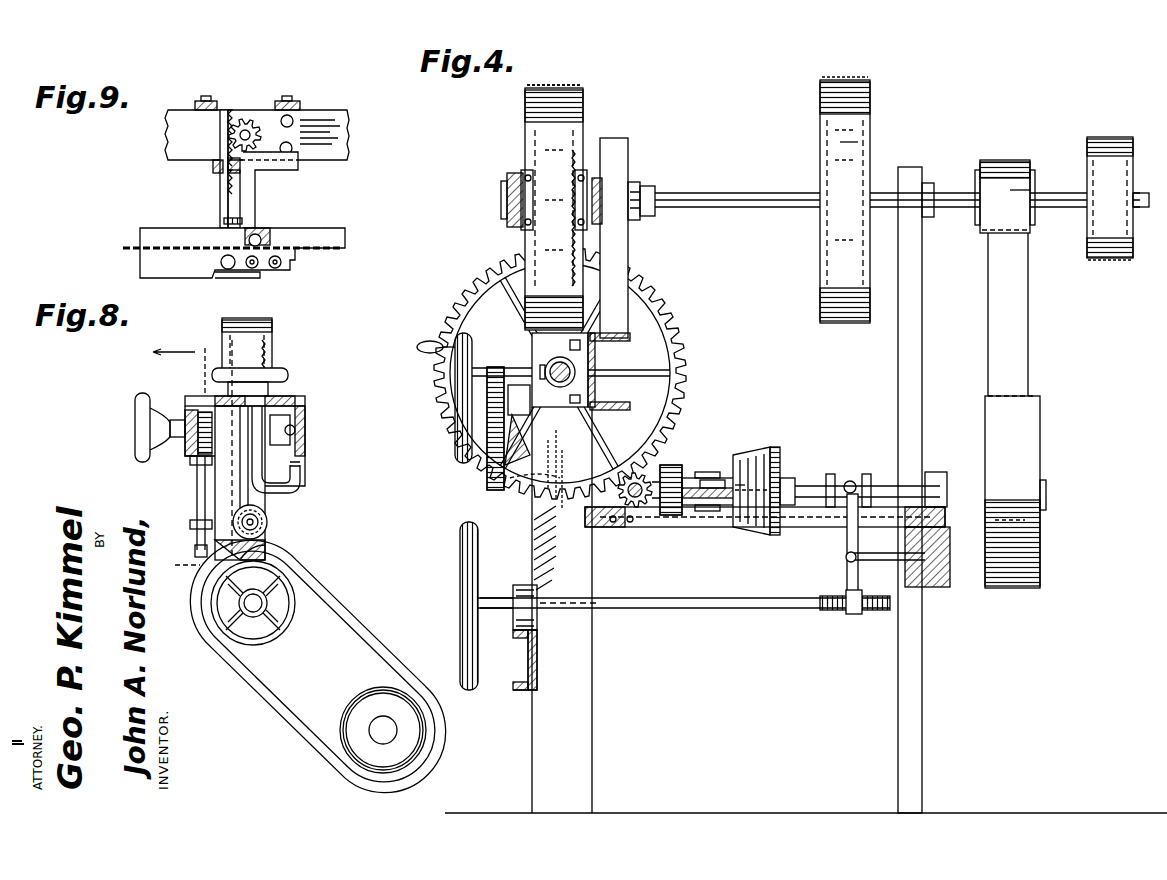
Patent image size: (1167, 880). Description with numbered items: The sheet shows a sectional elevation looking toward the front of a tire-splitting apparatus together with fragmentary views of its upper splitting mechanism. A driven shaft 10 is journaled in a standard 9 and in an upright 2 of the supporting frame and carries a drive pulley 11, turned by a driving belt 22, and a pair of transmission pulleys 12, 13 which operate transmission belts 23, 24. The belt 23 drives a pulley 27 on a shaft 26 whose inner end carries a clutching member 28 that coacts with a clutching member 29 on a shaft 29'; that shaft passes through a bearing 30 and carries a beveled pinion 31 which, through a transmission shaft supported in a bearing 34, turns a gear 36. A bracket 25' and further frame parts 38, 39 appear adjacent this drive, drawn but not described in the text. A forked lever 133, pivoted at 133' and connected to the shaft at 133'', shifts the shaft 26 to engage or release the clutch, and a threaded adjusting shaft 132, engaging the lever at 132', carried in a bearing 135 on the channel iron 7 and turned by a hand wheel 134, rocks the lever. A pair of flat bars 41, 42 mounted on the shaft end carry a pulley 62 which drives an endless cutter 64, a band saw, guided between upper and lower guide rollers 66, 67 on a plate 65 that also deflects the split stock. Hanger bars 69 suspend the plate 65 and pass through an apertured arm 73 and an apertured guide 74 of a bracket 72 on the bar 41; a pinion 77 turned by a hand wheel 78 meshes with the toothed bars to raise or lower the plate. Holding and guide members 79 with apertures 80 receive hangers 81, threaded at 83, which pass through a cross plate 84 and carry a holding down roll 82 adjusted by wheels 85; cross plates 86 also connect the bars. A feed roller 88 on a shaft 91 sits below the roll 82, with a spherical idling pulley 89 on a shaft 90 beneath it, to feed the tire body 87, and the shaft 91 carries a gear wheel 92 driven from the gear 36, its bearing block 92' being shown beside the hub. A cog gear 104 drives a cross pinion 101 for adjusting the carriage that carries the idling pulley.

In FIG. 4, the upright 2 is at (915, 332).
In FIG. 4, the channel iron 7 is at (528, 666).
In FIG. 8, the standard 9 is at (180, 451).
In FIG. 4, the driven shaft 10 is at (758, 193).
In FIG. 4, the drive pulley 11 is at (852, 142).
In FIG. 4, the transmission pulley 12 is at (1032, 178).
In FIG. 4, the transmission pulley 13 is at (1087, 232).
In FIG. 4, the driving belt 22 is at (845, 80).
In FIG. 4, the transmission belt 23 is at (1000, 162).
In FIG. 4, the transmission belt 24 is at (1105, 260).
In FIG. 4, the bracket 25' is at (938, 506).
In FIG. 4, the shaft 26 is at (810, 486).
In FIG. 4, the pulley 27 is at (1045, 415).
In FIG. 4, the clutching member 28 is at (783, 470).
In FIG. 4, the clutching member 29 is at (756, 469).
In FIG. 4, the shaft 29' is at (753, 429).
In FIG. 4, the bearing 30 is at (705, 478).
In FIG. 4, the beveled pinion 31 is at (700, 485).
In FIG. 4, the bearing 34 is at (660, 512).
In FIG. 4, the gear 36 is at (663, 470).
In FIG. 4, the bracket 38 is at (545, 508).
In FIG. 4, the pinion 39 is at (632, 502).
In FIG. 4, the flat bar 41 is at (507, 200).
In FIG. 8, the flat bar 41 is at (190, 447).
In FIG. 4, the flat bar 42 is at (604, 190).
In FIG. 8, the flat bar 42 is at (305, 404).
In FIG. 4, the pulley 62 is at (583, 118).
In FIG. 4, the endless cutter 64 is at (562, 88).
In FIG. 8, the endless cutter 64 is at (240, 318).
In FIG. 9, the plate 65 is at (182, 260).
In FIG. 9, the upper guide roller 66 is at (265, 234).
In FIG. 9, the lower guide roller 67 is at (258, 272).
In FIG. 9, the hanger bar 69 is at (222, 193).
In FIG. 9, the bracket 72 is at (248, 190).
In FIG. 9, the apertured arm 73 is at (222, 222).
In FIG. 9, the apertured guide 74 is at (216, 166).
In FIG. 9, the pinion 77 is at (248, 120).
In FIG. 8, the hand wheel 78 is at (135, 418).
In FIG. 8, the combined holding and guide member 79 is at (300, 470).
In FIG. 8, the aperture 80 is at (205, 490).
In FIG. 8, the hanger 81 is at (257, 470).
In FIG. 8, the holding down roll 82 is at (268, 520).
In FIG. 8, the threaded portion 83 is at (268, 402).
In FIG. 8, the cross plate 84 is at (202, 396).
In FIG. 8, the adjusting wheel 85 is at (272, 370).
In FIG. 9, the cross plate 86 is at (292, 101).
In FIG. 8, the tire body 87 is at (345, 620).
In FIG. 8, the feed roller 88 is at (258, 612).
In FIG. 8, the idling pulley 89 is at (396, 705).
In FIG. 8, the shaft 90 is at (385, 731).
In FIG. 4, the shaft 91 is at (575, 370).
In FIG. 8, the shaft 91 is at (267, 576).
In FIG. 4, the gear wheel 92 is at (573, 373).
In FIG. 4, the bearing block 92' is at (535, 365).
In FIG. 4, the cross pinion 101 is at (487, 470).
In FIG. 4, the cog gear 104 is at (458, 388).
In FIG. 4, the adjusting shaft 132 is at (685, 622).
In FIG. 4, the threaded engagement 132' is at (824, 619).
In FIG. 4, the forked lever 133 is at (820, 544).
In FIG. 4, the pivot 133' is at (853, 567).
In FIG. 4, the connection 133'' is at (879, 470).
In FIG. 4, the hand wheel 134 is at (478, 565).
In FIG. 4, the bearing 135 is at (525, 585).